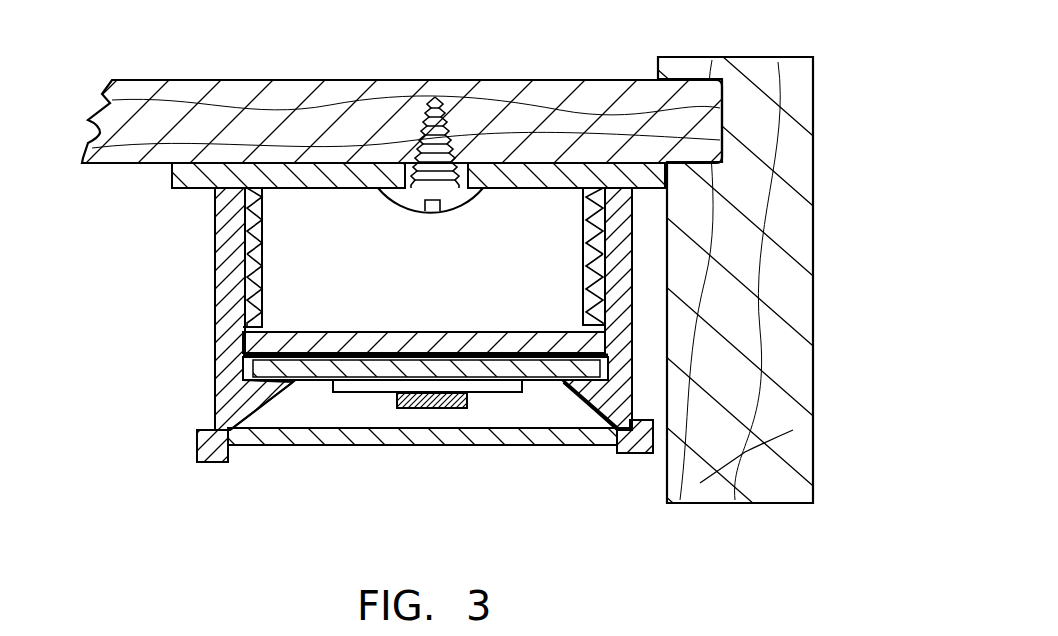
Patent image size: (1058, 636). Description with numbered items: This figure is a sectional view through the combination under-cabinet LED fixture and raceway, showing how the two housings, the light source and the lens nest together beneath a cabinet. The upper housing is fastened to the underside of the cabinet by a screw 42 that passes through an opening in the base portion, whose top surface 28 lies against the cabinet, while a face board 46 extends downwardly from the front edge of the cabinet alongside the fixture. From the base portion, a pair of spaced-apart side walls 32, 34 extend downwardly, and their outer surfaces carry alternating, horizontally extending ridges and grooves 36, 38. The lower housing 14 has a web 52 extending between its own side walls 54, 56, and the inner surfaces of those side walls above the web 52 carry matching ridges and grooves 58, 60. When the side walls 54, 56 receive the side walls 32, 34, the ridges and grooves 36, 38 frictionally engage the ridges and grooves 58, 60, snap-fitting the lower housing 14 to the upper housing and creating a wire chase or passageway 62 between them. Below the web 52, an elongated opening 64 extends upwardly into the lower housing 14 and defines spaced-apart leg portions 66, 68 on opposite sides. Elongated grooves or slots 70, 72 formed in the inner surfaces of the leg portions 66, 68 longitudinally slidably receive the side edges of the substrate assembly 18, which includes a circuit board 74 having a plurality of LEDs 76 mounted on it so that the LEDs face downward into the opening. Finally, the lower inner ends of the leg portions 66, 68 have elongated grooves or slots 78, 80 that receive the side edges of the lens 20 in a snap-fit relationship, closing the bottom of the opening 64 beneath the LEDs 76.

The lower housing 14 is at (200, 387).
The substrate assembly 18 is at (545, 370).
The lens 20 is at (478, 454).
The top surface 28 is at (347, 188).
The side wall 32 is at (253, 290).
The side wall 34 is at (598, 285).
The ridges and grooves 36 is at (250, 243).
The ridges and grooves 38 is at (598, 260).
The screw 42 is at (457, 200).
The face board 46 is at (785, 472).
The web 52 is at (423, 343).
The side wall 54 is at (213, 217).
The side wall 56 is at (620, 232).
The ridges and grooves 58 is at (240, 290).
The ridges and grooves 60 is at (610, 285).
The wire chase or passageway 62 is at (437, 261).
The elongated opening 64 is at (353, 417).
The leg portion 66 is at (235, 407).
The leg portion 68 is at (608, 410).
The groove or slot 70 is at (240, 372).
The groove or slot 72 is at (610, 365).
The circuit board 74 is at (370, 385).
The LEDs 76 is at (438, 408).
The groove or slot 78 is at (228, 432).
The groove or slot 80 is at (620, 433).